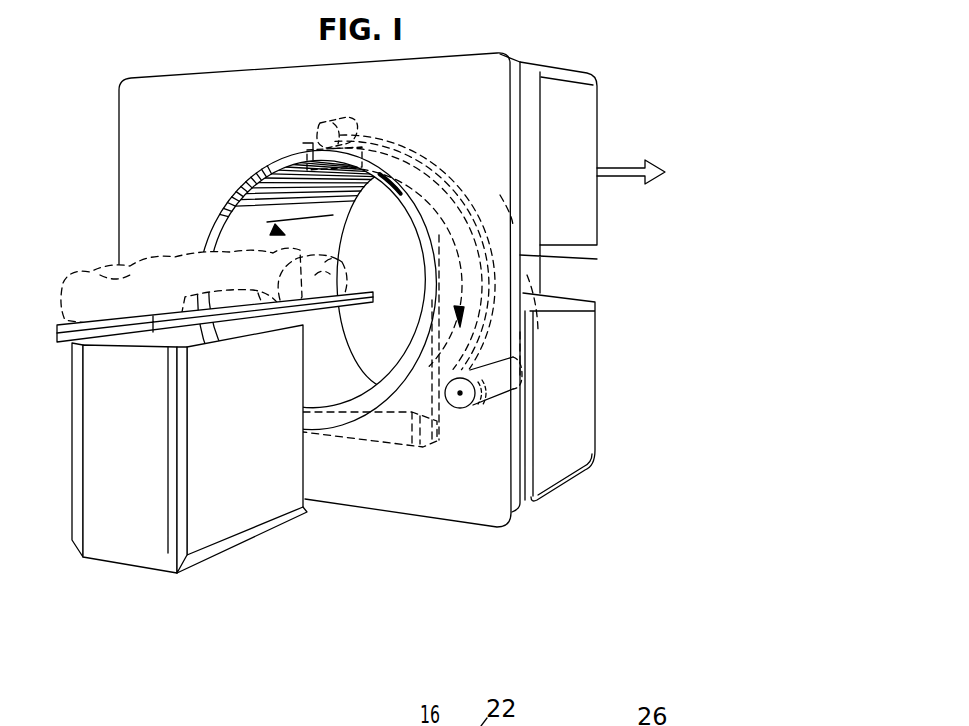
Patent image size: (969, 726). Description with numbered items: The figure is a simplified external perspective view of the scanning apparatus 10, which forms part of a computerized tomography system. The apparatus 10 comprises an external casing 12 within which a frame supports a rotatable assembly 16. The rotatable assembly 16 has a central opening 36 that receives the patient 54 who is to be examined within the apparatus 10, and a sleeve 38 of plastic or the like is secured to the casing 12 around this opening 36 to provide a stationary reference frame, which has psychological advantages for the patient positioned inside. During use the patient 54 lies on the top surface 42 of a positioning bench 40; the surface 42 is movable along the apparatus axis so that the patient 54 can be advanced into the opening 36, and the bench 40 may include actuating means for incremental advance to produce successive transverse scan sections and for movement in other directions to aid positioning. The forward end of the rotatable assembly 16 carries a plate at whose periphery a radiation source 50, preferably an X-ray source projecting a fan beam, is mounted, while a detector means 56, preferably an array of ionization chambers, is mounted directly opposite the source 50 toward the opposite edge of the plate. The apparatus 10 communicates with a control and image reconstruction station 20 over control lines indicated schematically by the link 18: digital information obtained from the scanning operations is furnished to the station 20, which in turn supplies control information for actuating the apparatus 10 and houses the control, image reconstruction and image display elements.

The scanning apparatus 10 is at (616, 94).
The external casing 12 is at (463, 113).
The rotatable assembly 16 is at (492, 193).
The link 18 is at (641, 166).
The control and image reconstruction station 20 is at (763, 222).
The central opening 36 is at (280, 232).
The sleeve 38 is at (327, 392).
The positioning bench 40 is at (141, 491).
The top surface 42 is at (115, 340).
The radiation source 50 is at (308, 134).
The patient 54 is at (190, 285).
The detector means 56 is at (393, 442).